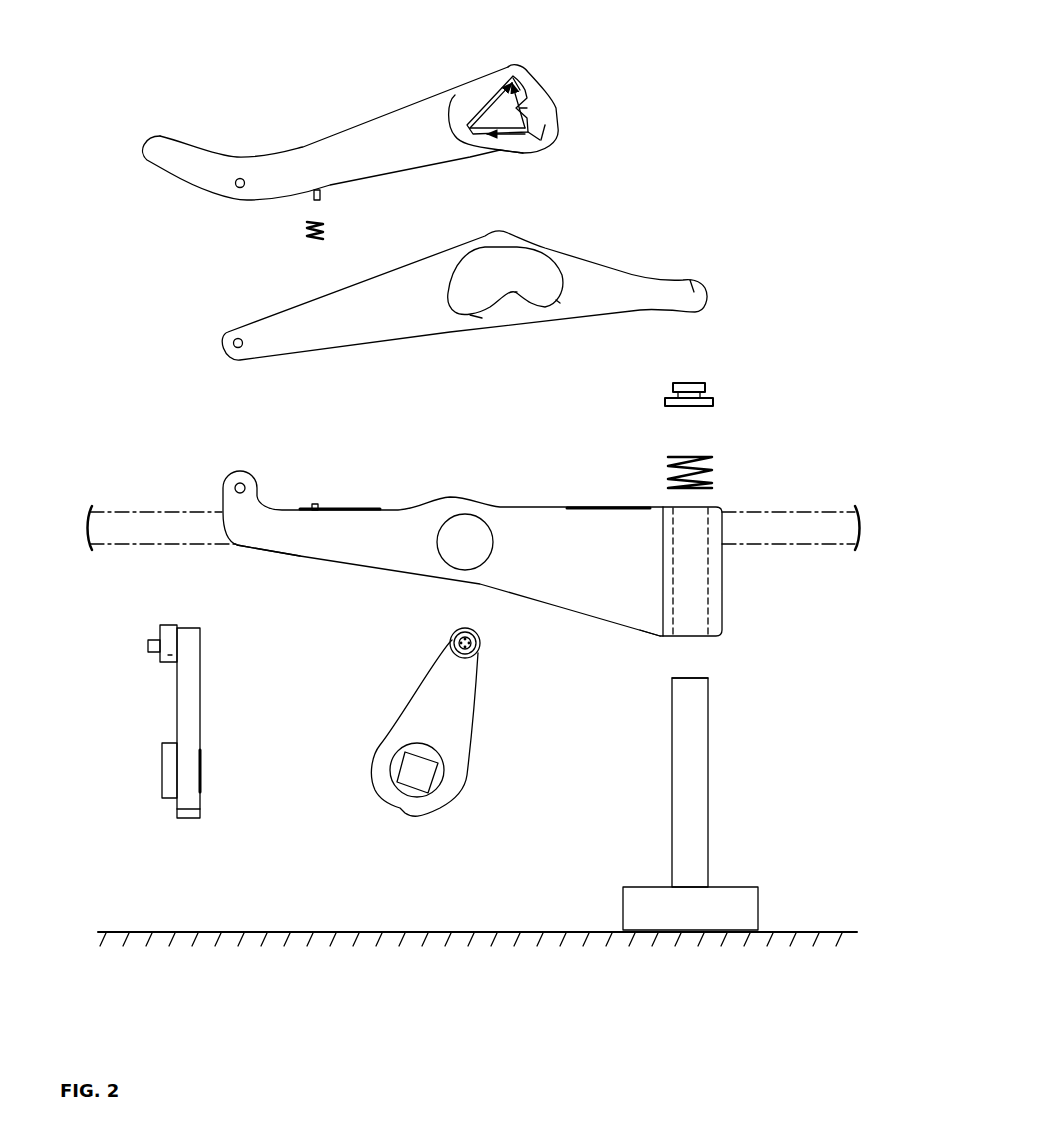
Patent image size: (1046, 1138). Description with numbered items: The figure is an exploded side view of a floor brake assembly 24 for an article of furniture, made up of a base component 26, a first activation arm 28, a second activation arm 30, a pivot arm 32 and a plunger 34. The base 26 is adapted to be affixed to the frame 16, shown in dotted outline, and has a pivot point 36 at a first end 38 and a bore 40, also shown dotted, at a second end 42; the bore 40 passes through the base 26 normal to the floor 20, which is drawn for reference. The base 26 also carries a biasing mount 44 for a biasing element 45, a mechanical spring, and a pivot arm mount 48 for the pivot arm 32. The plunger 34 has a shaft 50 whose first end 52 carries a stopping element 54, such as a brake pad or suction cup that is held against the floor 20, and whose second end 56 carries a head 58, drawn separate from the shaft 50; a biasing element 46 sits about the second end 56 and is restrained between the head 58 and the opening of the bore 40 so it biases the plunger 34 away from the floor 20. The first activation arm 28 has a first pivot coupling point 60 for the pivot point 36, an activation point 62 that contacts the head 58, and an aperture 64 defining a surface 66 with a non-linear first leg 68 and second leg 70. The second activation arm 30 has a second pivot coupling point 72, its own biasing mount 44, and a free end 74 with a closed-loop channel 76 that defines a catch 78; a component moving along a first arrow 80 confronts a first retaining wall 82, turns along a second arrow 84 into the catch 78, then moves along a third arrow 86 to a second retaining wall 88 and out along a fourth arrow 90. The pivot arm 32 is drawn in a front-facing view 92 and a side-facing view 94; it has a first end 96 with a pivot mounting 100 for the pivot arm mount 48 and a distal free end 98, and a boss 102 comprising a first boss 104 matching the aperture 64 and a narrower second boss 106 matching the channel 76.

The frame 16 is at (148, 506).
The floor 20 is at (460, 935).
The brake assembly 24 is at (396, 257).
The base component 26 is at (472, 579).
The first activation arm 28 is at (467, 294).
The second activation arm 30 is at (379, 102).
The pivot arm 32 is at (307, 731).
The plunger 34 is at (731, 804).
The pivot point 36 is at (230, 486).
The first end of the base 38 is at (265, 572).
The bore 40 is at (695, 565).
The second end of the base 42 is at (652, 652).
The biasing mount 44 is at (328, 190).
The biasing element 45 is at (305, 231).
The biasing element 46 is at (710, 463).
The pivot arm mount 48 is at (480, 532).
The shaft 50 is at (690, 742).
The first end of the shaft 52 is at (731, 880).
The stopping element 54 is at (740, 905).
The second end of the shaft 56 is at (712, 694).
The head 58 is at (700, 392).
The first pivot coupling point 60 is at (233, 350).
The activation point 62 is at (694, 293).
The aperture 64 is at (472, 270).
The surface 66 is at (505, 291).
The first leg 68 is at (482, 318).
The second leg 70 is at (560, 303).
The second pivot coupling point 72 is at (238, 177).
The free end 74 is at (532, 103).
The channel 76 is at (462, 124).
The catch 78 is at (527, 108).
The first arrow 80 is at (478, 108).
The first retaining wall 82 is at (497, 85).
The second arrow 84 is at (513, 80).
The third arrow 86 is at (541, 141).
The second retaining wall 88 is at (545, 140).
The fourth arrow 90 is at (505, 140).
The front-facing view 92 is at (357, 753).
The side-facing view 94 is at (143, 726).
The first end 96 is at (455, 770).
The free end 98 is at (488, 653).
The pivot mounting 100 is at (447, 790).
The boss 102 is at (165, 630).
The first boss 104 is at (168, 656).
The second boss 106 is at (152, 649).